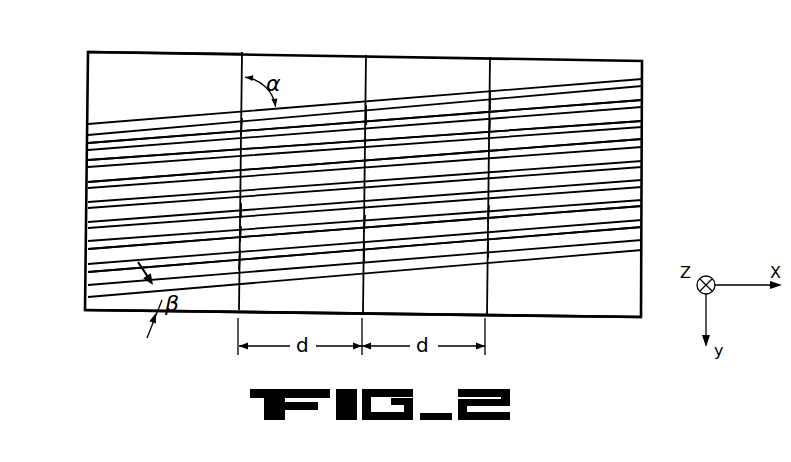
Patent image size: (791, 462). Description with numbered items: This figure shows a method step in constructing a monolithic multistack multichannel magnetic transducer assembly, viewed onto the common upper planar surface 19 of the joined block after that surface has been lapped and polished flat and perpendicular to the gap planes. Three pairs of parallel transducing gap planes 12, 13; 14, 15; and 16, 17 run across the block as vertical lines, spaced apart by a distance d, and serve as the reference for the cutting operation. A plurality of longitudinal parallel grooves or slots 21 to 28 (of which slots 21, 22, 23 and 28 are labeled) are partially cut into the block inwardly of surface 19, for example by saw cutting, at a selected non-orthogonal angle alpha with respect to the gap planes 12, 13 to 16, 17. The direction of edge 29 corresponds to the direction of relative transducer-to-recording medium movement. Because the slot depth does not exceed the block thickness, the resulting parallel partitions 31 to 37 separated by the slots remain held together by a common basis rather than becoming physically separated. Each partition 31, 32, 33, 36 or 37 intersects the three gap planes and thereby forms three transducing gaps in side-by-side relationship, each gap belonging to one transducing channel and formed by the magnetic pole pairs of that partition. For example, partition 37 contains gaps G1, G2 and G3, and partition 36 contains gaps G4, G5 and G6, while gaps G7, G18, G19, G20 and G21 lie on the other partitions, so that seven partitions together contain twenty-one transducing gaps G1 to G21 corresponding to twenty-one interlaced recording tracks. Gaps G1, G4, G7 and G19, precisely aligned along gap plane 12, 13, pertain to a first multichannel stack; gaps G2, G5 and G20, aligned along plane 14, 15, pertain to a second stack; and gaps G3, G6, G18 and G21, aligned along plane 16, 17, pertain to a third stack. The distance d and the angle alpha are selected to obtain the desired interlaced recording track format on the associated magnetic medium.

The upper planar surface 19 is at (132, 62).
The gap plane 12 is at (284, 167).
The gap plane 13 is at (243, 52).
The gap plane 14 is at (409, 168).
The gap plane 15 is at (367, 55).
The gap plane 16 is at (532, 169).
The gap plane 17 is at (491, 57).
The slot 21 is at (638, 82).
The slot 22 is at (638, 102).
The slot 23 is at (637, 130).
The slot 28 is at (635, 239).
The edge 29 is at (592, 318).
The partition 31 is at (87, 142).
The partition 32 is at (87, 162).
The partition 33 is at (87, 185).
The partition 36 is at (87, 254).
The partition 37 is at (87, 275).
The transducing gap G1 is at (240, 259).
The transducing gap G2 is at (365, 253).
The transducing gap G3 is at (489, 248).
The transducing gap G4 is at (241, 236).
The transducing gap G5 is at (365, 225).
The transducing gap G6 is at (489, 215).
The transducing gap G7 is at (241, 212).
The transducing gap G18 is at (487, 130).
The transducing gap G19 is at (240, 130).
The transducing gap G20 is at (367, 117).
The transducing gap G21 is at (491, 102).